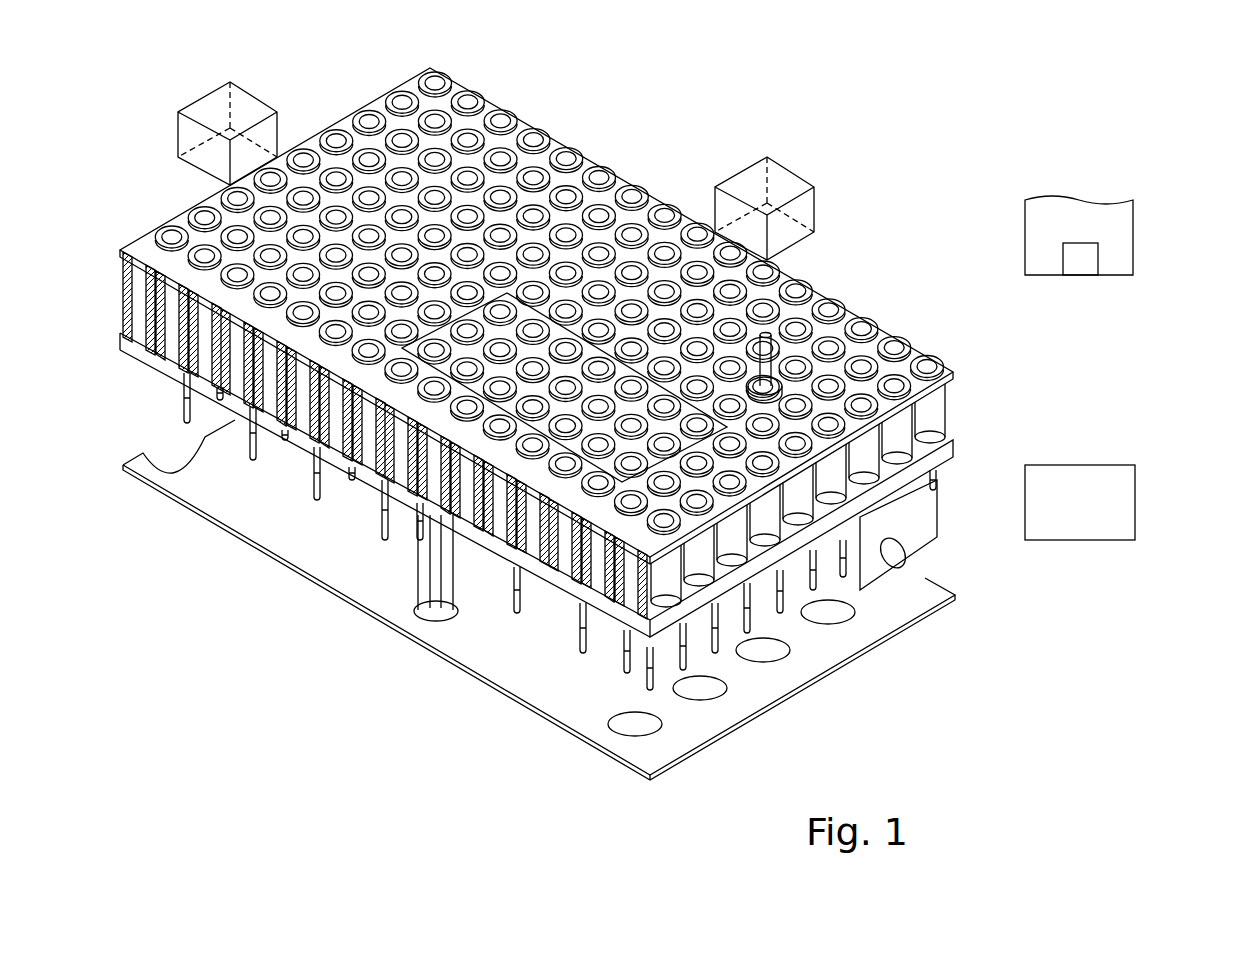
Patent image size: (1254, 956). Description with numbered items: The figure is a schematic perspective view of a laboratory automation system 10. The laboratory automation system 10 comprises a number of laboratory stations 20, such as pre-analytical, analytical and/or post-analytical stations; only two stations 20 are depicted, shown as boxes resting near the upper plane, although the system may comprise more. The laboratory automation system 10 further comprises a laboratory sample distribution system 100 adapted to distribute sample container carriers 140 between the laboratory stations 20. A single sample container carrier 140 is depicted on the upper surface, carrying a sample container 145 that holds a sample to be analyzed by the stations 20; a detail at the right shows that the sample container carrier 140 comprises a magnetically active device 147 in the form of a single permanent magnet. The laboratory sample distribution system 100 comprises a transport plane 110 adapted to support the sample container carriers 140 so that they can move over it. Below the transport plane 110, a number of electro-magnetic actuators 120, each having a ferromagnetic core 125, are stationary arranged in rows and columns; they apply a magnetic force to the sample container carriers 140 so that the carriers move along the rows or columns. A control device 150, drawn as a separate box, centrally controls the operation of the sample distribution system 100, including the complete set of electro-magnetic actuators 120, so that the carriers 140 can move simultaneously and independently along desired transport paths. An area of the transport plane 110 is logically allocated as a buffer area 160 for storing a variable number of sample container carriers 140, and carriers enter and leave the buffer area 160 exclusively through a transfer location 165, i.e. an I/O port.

The laboratory automation system 10 is at (131, 746).
The laboratory station 20 is at (260, 104).
The laboratory sample distribution system 100 is at (212, 577).
The transport plane 110 is at (785, 278).
The electro-magnetic actuator 120 is at (577, 607).
The ferromagnetic core 125 is at (613, 573).
The sample container carrier 140 is at (785, 378).
The sample container 145 is at (785, 333).
The magnetically active device 147 is at (1077, 263).
The control device 150 is at (1062, 513).
The buffer area 160 is at (383, 490).
The transfer location 165 is at (507, 293).